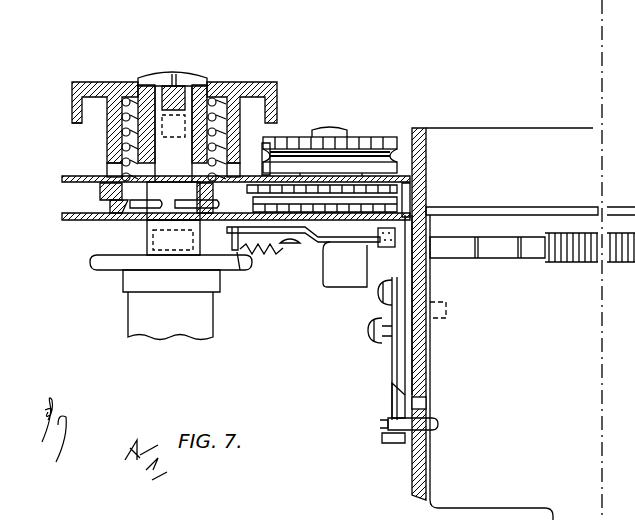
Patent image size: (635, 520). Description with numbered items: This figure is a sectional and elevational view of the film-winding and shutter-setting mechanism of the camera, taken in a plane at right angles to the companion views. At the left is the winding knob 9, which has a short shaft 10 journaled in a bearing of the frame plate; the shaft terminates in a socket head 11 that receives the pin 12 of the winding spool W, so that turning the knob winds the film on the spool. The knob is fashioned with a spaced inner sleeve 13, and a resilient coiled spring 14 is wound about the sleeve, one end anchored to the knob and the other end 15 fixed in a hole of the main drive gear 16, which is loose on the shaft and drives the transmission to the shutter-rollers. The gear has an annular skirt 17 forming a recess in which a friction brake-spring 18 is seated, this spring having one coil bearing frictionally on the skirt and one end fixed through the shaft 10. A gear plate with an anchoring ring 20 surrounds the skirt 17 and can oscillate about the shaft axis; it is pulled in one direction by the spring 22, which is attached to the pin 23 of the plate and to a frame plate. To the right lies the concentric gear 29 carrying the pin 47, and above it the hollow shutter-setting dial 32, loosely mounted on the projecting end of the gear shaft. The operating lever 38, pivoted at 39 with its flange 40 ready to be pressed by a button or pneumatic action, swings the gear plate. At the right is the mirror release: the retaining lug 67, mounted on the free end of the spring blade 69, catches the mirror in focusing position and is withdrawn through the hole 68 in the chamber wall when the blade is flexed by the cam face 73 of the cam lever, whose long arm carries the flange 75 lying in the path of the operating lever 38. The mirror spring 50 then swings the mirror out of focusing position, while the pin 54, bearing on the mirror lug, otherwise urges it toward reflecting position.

The knob 9 is at (230, 107).
The short shaft 10 is at (172, 146).
The socket head 11 is at (146, 238).
The pin 12 is at (108, 135).
The inner sleeve 13 is at (245, 97).
The coiled spring 14 is at (126, 100).
The spring end 15 is at (268, 143).
The main drive gear 16 is at (118, 190).
The annular skirt 17 is at (128, 212).
The friction brake-spring 18 is at (183, 212).
The anchoring ring 20 is at (98, 216).
The spring 22 is at (270, 258).
The pin 23 is at (240, 270).
The concentric gear 29 is at (412, 202).
The shutter-setting dial 32 is at (375, 138).
The operating lever 38 is at (340, 270).
The pivot 39 is at (310, 240).
The flange 40 is at (352, 290).
The pin 47 is at (427, 168).
The mirror spring 50 is at (582, 264).
The pin 54 is at (450, 306).
The retaining lug 67 is at (440, 425).
The hole 68 is at (428, 404).
The spring blade 69 is at (390, 370).
The cam face 73 is at (395, 395).
The flange 75 is at (385, 250).
The winding spool W is at (128, 308).